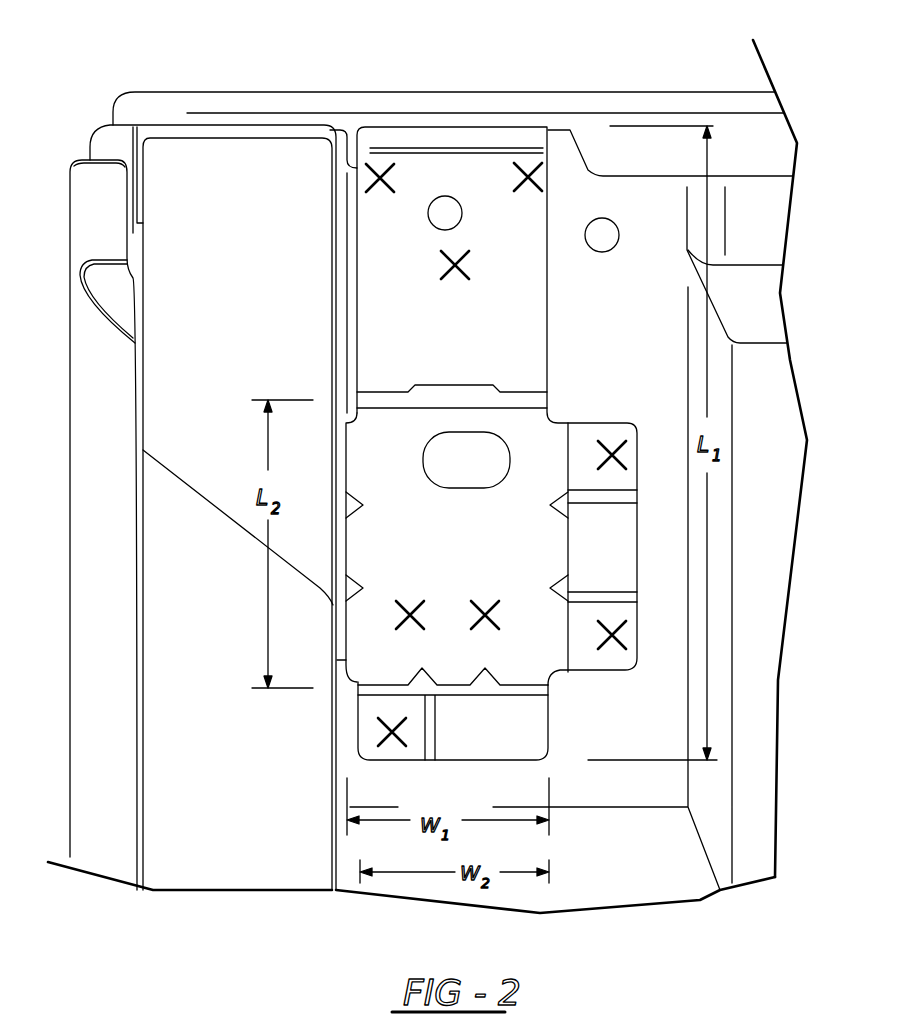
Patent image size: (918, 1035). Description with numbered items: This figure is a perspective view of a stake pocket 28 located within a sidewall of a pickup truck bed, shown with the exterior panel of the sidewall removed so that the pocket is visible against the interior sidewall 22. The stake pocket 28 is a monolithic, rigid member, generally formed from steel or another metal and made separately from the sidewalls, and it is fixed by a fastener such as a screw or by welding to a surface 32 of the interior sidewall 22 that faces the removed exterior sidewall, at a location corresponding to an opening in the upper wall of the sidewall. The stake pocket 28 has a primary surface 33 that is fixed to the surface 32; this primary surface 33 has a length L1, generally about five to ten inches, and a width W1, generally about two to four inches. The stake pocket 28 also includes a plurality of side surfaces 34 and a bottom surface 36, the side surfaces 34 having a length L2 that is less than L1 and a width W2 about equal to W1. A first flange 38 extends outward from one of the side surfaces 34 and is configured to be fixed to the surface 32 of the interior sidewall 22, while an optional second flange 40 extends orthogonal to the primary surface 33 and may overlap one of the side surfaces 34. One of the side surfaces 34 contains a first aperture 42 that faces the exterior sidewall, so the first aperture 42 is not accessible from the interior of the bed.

The interior sidewall 22 is at (767, 417).
The stake pocket 28 is at (548, 308).
The surface 32 is at (767, 212).
The primary surface 33 is at (481, 347).
The side surfaces 34 is at (504, 553).
The bottom surface 36 is at (527, 687).
The first flange 38 is at (590, 435).
The second flange 40 is at (352, 190).
The first aperture 42 is at (423, 460).